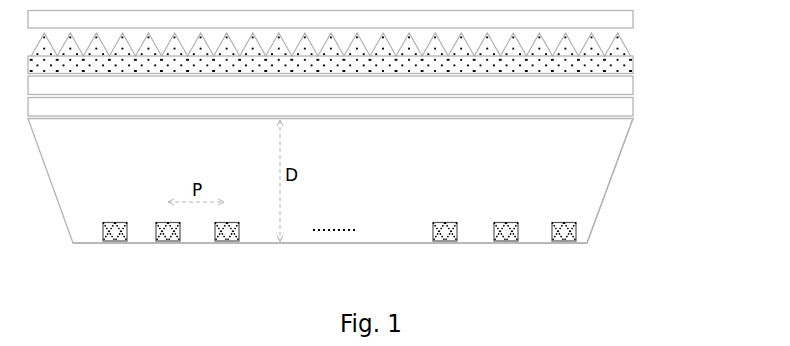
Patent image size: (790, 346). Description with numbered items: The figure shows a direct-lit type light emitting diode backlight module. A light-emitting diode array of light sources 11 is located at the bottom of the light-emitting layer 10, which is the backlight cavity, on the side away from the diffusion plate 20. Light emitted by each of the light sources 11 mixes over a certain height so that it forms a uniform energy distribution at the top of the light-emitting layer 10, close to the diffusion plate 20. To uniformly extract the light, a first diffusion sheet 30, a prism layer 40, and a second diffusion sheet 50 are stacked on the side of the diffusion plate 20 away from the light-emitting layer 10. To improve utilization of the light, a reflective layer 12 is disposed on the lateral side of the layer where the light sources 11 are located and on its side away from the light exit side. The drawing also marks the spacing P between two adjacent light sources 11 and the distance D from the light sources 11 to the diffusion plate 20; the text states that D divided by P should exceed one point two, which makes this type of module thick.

The second diffusion sheet 50 is at (595, 23).
The prism layer 40 is at (595, 70).
The first diffusion sheet 30 is at (595, 87).
The diffusion plate 20 is at (590, 110).
The light-emitting layer 10 is at (545, 220).
The light source 11 is at (518, 240).
The reflective layer 12 is at (610, 182).